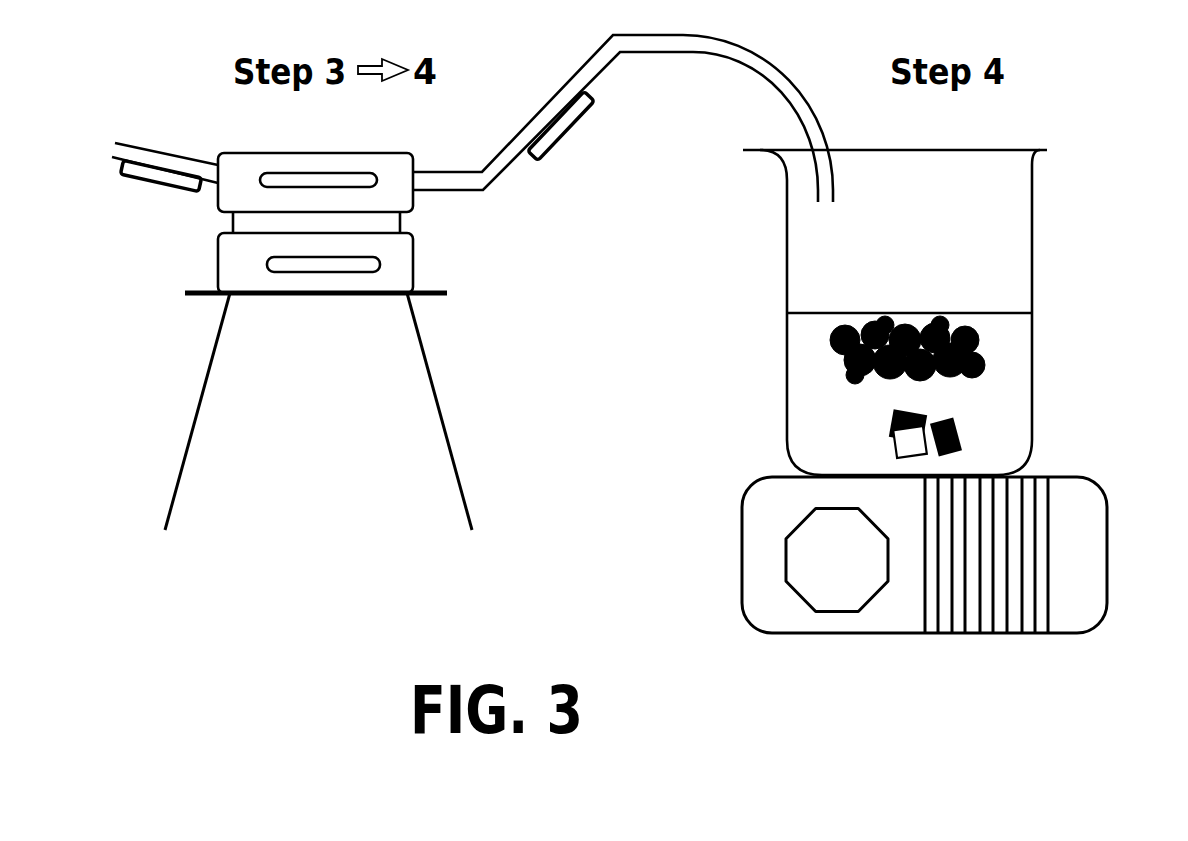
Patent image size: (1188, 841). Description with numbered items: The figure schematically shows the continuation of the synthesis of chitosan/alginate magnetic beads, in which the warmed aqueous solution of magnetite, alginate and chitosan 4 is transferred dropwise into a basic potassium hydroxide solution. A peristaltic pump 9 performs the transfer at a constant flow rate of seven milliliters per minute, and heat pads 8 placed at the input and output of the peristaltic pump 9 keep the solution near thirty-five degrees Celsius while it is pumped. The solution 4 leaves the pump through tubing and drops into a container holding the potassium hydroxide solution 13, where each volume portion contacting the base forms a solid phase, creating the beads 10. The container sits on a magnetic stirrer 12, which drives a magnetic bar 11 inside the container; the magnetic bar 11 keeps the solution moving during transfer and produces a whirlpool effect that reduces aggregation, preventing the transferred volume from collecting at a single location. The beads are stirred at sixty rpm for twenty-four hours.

The aqueous solution of magnetite, alginate and chitosan 4 is at (820, 212).
The heat pads 8 is at (157, 178).
The peristaltic pump 9 is at (318, 287).
The crystals 10 is at (962, 352).
The magnetic bar 11 is at (935, 430).
The magnetic stirrer 12 is at (825, 578).
The beaker 13 is at (962, 226).